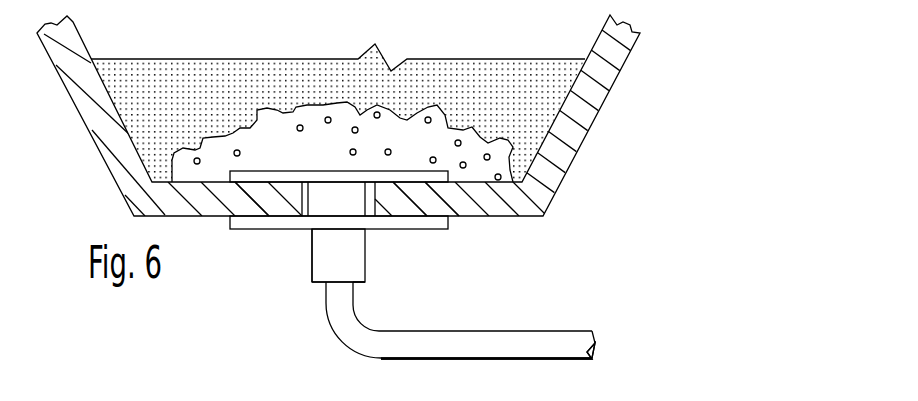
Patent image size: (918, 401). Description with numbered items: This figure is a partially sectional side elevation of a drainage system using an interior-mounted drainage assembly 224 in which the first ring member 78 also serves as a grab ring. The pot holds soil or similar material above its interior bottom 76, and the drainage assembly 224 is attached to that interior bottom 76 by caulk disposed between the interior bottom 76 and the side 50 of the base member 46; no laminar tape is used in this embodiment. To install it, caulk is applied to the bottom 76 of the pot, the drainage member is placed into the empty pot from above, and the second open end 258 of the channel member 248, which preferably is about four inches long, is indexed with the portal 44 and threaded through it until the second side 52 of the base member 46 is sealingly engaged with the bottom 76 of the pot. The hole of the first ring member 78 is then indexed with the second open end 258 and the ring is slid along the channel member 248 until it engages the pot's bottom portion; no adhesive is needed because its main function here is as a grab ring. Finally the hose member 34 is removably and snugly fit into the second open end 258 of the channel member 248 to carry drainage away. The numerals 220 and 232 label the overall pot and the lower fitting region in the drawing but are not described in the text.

The crucible / container 220 is at (574, 202).
The base member 46 is at (273, 177).
The portal 44 is at (309, 185).
The interior bottom 76 is at (411, 182).
The side 50 is at (235, 183).
The second side 52 is at (448, 203).
The first ring member 78 is at (262, 231).
The connector block 232 is at (381, 254).
The channel member 248 is at (315, 263).
The second open end 258 is at (358, 285).
The drainage assembly 224 is at (481, 263).
The hose member 34 is at (561, 339).